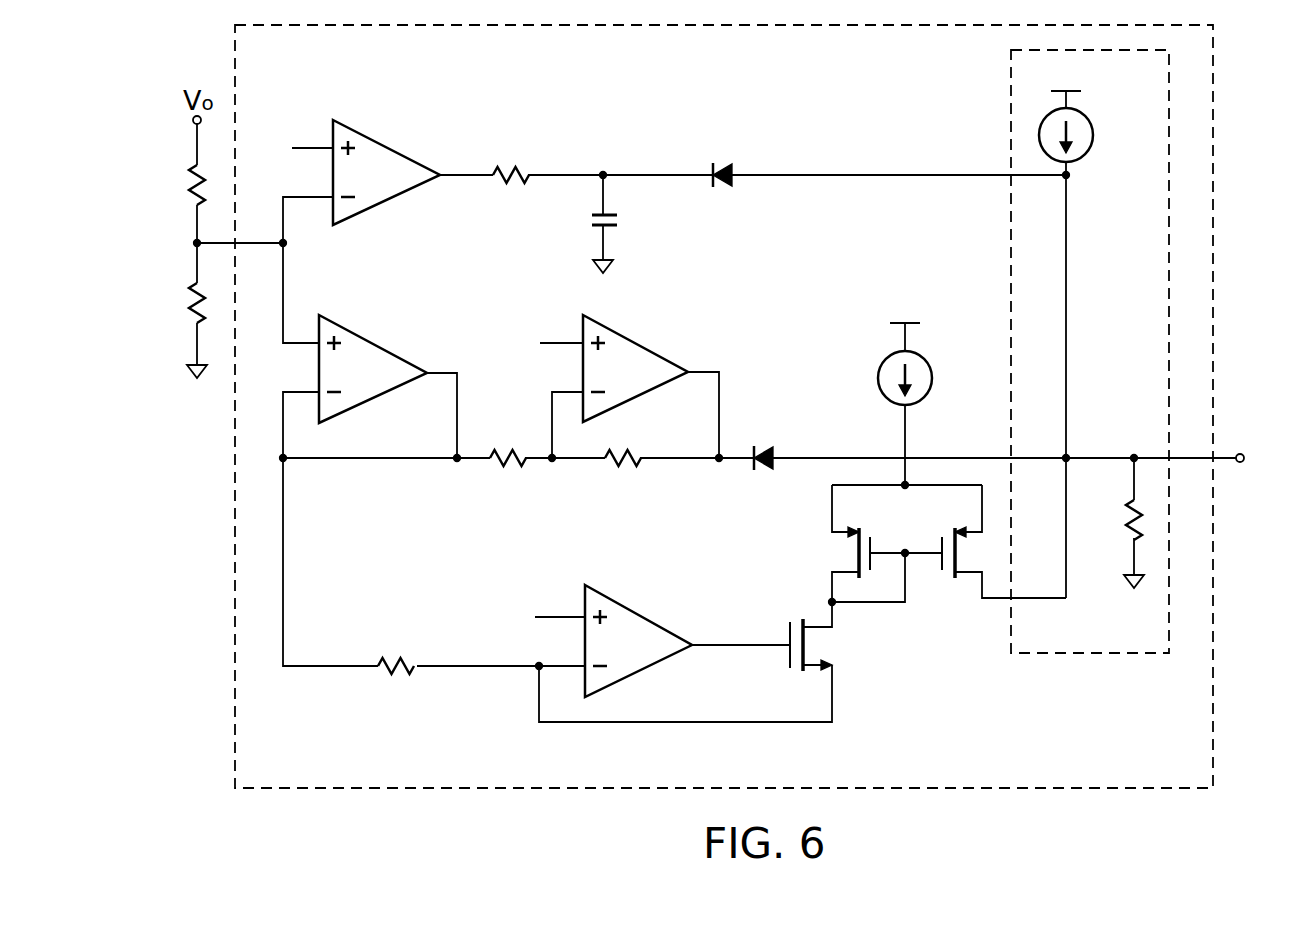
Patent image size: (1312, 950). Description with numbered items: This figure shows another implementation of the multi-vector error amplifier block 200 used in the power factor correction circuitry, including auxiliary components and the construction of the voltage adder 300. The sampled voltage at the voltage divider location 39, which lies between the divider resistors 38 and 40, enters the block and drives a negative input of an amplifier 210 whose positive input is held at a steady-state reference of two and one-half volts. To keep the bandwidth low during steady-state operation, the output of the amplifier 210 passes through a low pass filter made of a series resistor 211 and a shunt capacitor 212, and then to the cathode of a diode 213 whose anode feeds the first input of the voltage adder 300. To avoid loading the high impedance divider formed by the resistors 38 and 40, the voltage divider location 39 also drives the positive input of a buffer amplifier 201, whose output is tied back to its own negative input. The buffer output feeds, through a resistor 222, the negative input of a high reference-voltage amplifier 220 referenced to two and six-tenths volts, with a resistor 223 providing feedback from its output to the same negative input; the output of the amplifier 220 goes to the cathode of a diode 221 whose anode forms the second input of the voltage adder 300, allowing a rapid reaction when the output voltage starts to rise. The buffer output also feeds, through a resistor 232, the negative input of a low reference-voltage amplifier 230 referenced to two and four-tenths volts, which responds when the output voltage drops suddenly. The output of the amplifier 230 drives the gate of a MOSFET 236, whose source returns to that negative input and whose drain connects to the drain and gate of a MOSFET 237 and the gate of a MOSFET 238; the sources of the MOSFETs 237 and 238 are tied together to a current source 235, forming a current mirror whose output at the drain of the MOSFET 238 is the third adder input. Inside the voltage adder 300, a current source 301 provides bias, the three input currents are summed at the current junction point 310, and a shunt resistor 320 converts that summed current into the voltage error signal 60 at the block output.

The resistor 38 is at (180, 195).
The voltage divider location 39 is at (185, 247).
The resistor 40 is at (180, 315).
The voltage error signal 60 is at (1240, 446).
The multi-vector error amplifier block 200 is at (1214, 102).
The buffer amplifier 201 is at (372, 328).
The amplifier 210 is at (383, 128).
The series resistor 211 is at (512, 158).
The shunt capacitor 212 is at (590, 222).
The diode 213 is at (722, 192).
The high reference-voltage amplifier 220 is at (637, 330).
The diode 221 is at (757, 442).
The resistor 222 is at (495, 442).
The resistor 223 is at (615, 483).
The low reference-voltage amplifier 230 is at (637, 685).
The resistor 232 is at (390, 682).
The current source 235 is at (877, 392).
The MOSFET 236 is at (833, 653).
The MOSFET 237 is at (842, 560).
The MOSFET 238 is at (955, 585).
The voltage adder 300 is at (1008, 118).
The current source 301 is at (1087, 158).
The current junction point 310 is at (1068, 455).
The shunt resistor 320 is at (1120, 540).